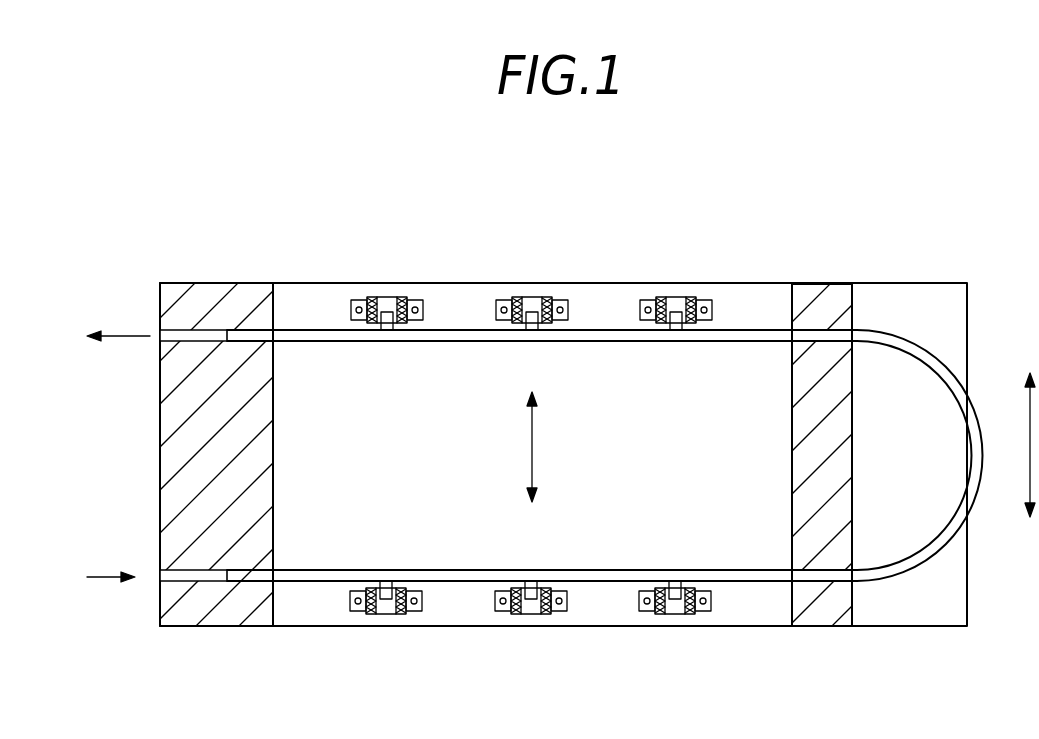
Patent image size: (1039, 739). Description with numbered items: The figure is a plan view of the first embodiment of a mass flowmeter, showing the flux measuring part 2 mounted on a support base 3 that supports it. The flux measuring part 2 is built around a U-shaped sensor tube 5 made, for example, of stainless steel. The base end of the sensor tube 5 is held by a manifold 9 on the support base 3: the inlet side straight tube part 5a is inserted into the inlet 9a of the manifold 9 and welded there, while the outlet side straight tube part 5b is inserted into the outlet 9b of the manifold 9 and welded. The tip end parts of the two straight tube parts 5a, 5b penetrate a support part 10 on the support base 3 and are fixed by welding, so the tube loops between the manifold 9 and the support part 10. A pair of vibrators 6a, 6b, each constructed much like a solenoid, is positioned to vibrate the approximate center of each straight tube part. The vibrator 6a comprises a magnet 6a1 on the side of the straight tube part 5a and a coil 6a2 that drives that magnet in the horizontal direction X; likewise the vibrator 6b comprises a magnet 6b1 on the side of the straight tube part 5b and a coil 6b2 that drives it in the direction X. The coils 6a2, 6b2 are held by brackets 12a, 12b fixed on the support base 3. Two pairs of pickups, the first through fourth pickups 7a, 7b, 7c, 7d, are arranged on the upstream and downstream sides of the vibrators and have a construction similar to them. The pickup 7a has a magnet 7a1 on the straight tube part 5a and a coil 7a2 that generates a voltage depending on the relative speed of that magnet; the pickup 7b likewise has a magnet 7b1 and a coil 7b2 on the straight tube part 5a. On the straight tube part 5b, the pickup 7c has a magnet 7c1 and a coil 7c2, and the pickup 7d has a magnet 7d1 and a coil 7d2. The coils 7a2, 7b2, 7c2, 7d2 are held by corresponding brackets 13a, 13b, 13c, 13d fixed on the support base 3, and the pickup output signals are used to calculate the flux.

The flux measuring part 2 is at (826, 266).
The support base 3 is at (900, 298).
The U-shaped sensor tube 5 is at (622, 428).
The inlet side straight tube part 5a is at (597, 574).
The outlet side straight tube part 5b is at (598, 344).
The vibrator 6a is at (578, 650).
The magnet 6a1 is at (558, 574).
The coil 6a2 is at (563, 614).
The vibrator 6b is at (602, 240).
The magnet 6b1 is at (547, 337).
The coil 6b2 is at (566, 299).
The first pickup 7a is at (337, 646).
The magnet 7a1 is at (350, 577).
The coil 7a2 is at (357, 614).
The second pickup 7b is at (766, 645).
The magnet 7b1 is at (712, 580).
The coil 7b2 is at (705, 614).
The third pickup 7c is at (753, 241).
The magnet 7c1 is at (695, 336).
The coil 7c2 is at (713, 299).
The fourth pickup 7d is at (451, 245).
The magnet 7d1 is at (421, 299).
The coil 7d2 is at (402, 334).
The manifold 9 is at (177, 455).
The inlet 9a is at (162, 578).
The outlet 9b is at (162, 336).
The support part 10 is at (804, 445).
The bracket 12a is at (502, 614).
The bracket 12b is at (503, 299).
The bracket 13a is at (410, 614).
The bracket 13b is at (648, 614).
The bracket 13c is at (650, 299).
The bracket 13d is at (352, 299).